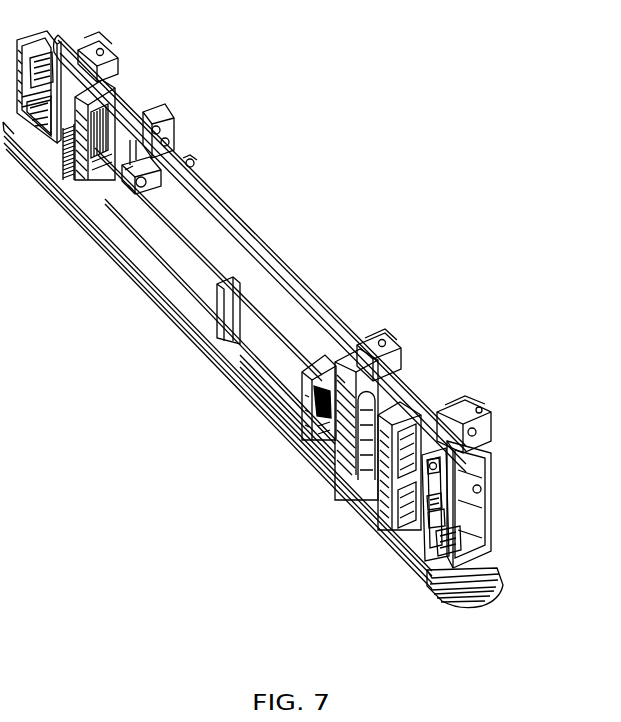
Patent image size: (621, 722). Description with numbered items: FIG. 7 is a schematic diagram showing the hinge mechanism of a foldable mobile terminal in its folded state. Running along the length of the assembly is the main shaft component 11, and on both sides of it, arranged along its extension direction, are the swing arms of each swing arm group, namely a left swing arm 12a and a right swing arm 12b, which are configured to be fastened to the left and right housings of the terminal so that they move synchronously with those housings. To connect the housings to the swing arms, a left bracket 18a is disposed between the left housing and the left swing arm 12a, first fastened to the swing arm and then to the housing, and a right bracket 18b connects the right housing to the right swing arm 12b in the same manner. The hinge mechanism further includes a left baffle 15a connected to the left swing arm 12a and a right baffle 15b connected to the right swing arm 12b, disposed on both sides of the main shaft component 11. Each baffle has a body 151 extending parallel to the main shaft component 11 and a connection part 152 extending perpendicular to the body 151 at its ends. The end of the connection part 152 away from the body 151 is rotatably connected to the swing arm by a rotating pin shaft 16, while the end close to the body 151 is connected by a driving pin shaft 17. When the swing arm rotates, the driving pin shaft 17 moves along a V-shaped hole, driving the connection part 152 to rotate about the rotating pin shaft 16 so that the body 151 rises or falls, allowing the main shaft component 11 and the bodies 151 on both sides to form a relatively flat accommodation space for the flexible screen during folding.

The main shaft component 11 is at (487, 598).
The left swing arm 12a is at (427, 435).
The right swing arm 12b is at (383, 363).
The left baffle 15a is at (344, 524).
The right baffle 15b is at (480, 493).
The body 151 is at (447, 540).
The connection part 152 is at (437, 517).
The rotating pin shaft 16 is at (433, 466).
The driving pin shaft 17 is at (433, 502).
The left bracket 18a is at (142, 128).
The right bracket 18b is at (88, 57).